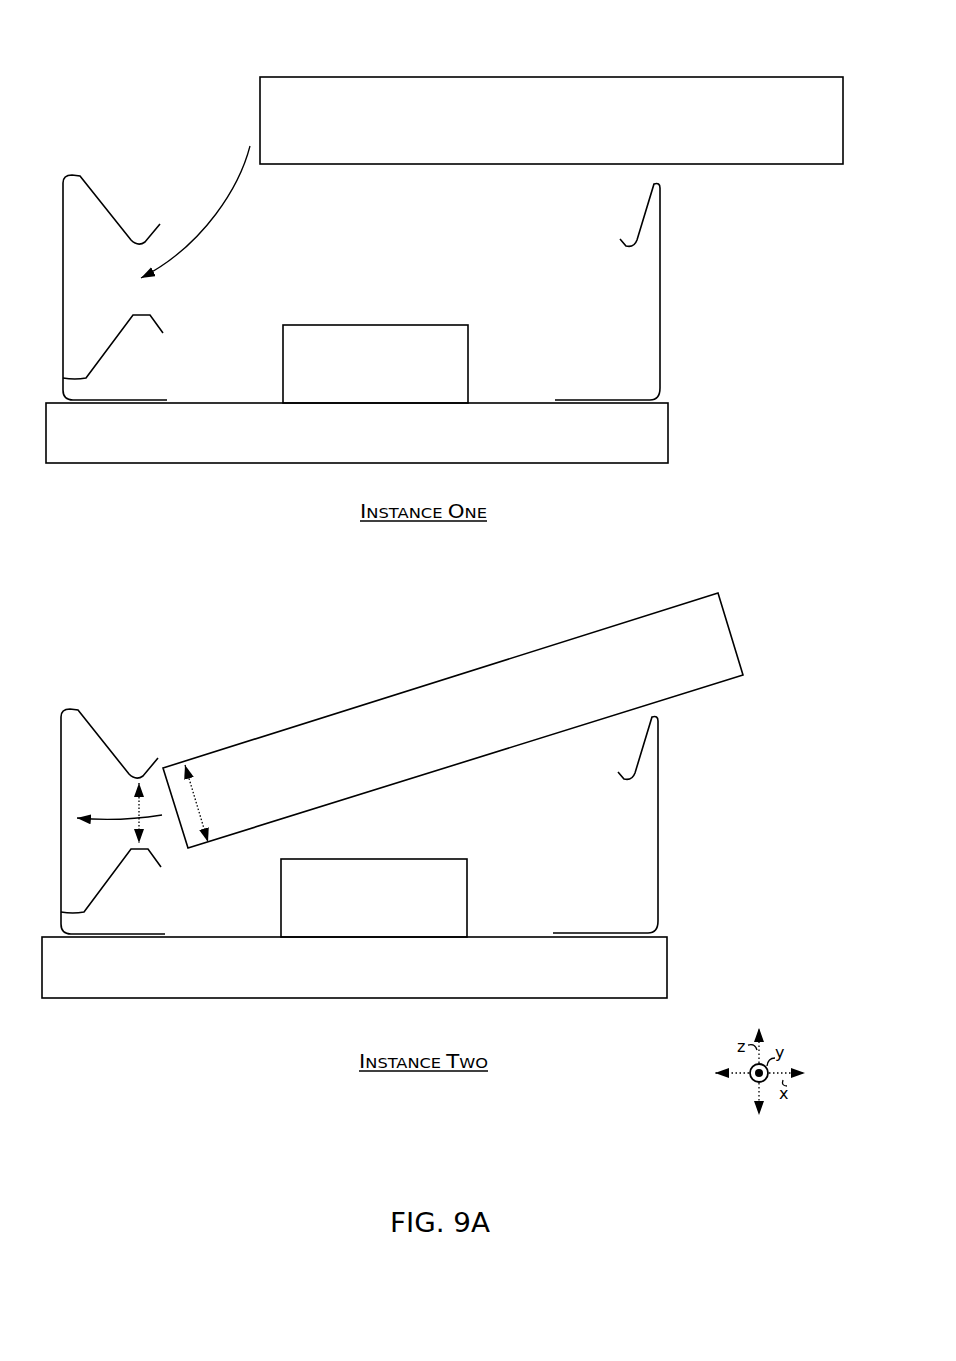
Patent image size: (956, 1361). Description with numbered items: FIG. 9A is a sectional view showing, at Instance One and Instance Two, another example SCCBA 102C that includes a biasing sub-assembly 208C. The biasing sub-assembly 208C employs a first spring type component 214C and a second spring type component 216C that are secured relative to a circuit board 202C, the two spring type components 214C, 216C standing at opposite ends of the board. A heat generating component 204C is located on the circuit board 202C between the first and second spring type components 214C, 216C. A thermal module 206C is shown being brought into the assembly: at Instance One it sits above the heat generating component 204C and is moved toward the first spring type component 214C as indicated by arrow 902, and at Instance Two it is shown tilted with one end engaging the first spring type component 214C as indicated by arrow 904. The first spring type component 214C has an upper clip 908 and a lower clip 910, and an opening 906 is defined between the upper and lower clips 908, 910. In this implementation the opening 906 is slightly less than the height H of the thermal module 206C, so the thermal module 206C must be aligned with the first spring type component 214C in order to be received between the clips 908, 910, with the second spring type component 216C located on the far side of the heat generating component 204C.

The SCCBA 102C is at (198, 606).
The circuit board 202C is at (468, 450).
The heat generating component 204C is at (425, 920).
The thermal module 206C is at (620, 128).
The biasing sub-assembly 208C is at (751, 788).
The first spring type component 214C is at (107, 725).
The second spring type component 216C is at (663, 329).
The arrow 902 is at (208, 235).
The arrow 904 is at (106, 816).
The opening 906 is at (138, 838).
The upper clip 908 is at (108, 757).
The lower clip 910 is at (110, 872).